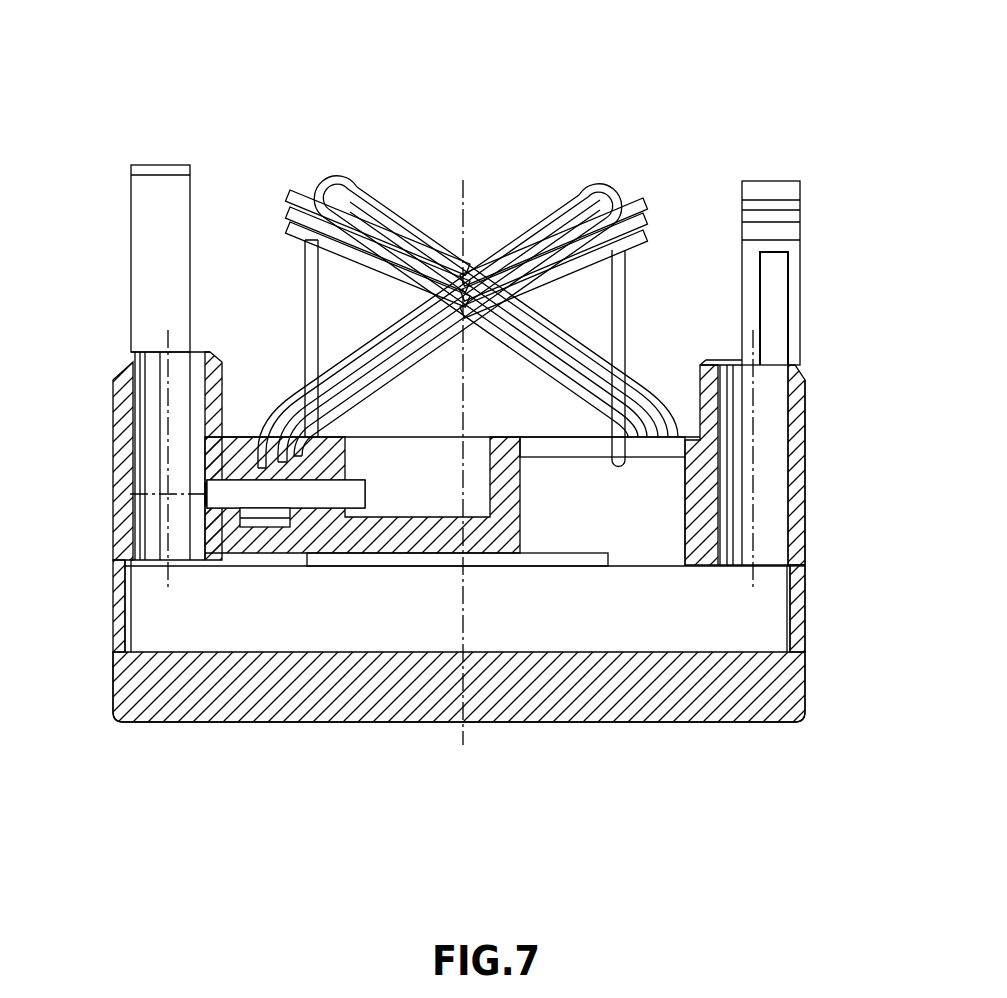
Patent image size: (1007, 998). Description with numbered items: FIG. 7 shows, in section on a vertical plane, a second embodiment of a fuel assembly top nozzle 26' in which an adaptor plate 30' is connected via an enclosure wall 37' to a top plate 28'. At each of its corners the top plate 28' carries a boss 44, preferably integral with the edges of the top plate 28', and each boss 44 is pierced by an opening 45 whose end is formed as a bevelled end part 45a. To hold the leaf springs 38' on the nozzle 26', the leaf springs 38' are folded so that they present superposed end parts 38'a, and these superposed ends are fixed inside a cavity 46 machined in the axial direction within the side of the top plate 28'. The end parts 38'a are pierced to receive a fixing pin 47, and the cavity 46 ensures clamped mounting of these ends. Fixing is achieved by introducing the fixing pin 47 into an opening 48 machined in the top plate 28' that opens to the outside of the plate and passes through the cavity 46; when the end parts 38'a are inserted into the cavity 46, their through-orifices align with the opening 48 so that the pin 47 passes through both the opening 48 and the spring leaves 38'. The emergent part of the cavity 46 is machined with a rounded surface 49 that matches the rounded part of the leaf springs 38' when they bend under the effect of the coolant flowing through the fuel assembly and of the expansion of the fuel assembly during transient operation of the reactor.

The fuel assembly top nozzle 26' is at (421, 582).
The top plate 28' is at (690, 497).
The adaptor plate 30' is at (459, 735).
The enclosure wall 37' is at (90, 500).
The leaf springs 38' is at (468, 244).
The superposed end parts 38'a is at (174, 436).
The boss 44 is at (128, 400).
The opening 45 is at (790, 512).
The bevelled end part 45a is at (733, 375).
The cavity 46 is at (268, 527).
The fixing pin 47 is at (305, 500).
The opening 48 is at (130, 500).
The rounded surface 49 is at (320, 437).